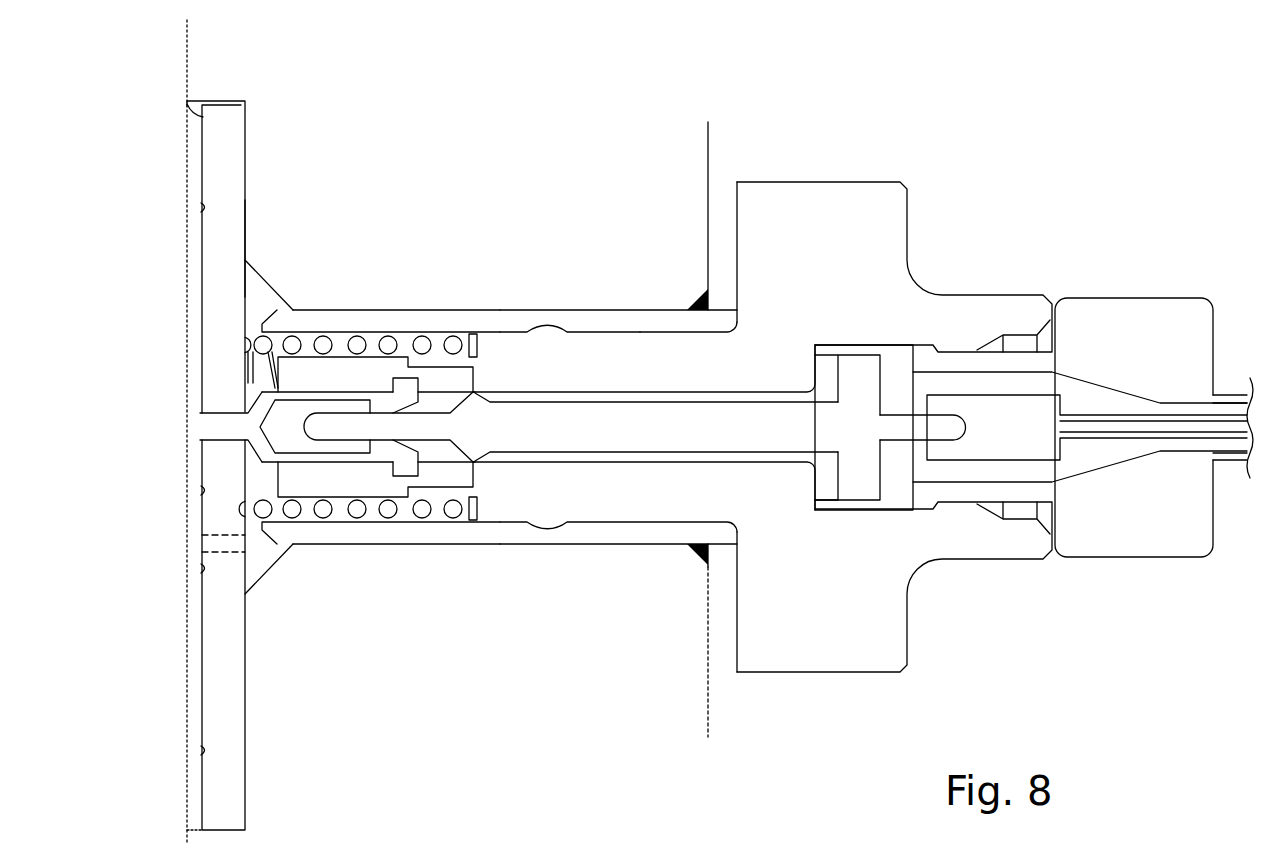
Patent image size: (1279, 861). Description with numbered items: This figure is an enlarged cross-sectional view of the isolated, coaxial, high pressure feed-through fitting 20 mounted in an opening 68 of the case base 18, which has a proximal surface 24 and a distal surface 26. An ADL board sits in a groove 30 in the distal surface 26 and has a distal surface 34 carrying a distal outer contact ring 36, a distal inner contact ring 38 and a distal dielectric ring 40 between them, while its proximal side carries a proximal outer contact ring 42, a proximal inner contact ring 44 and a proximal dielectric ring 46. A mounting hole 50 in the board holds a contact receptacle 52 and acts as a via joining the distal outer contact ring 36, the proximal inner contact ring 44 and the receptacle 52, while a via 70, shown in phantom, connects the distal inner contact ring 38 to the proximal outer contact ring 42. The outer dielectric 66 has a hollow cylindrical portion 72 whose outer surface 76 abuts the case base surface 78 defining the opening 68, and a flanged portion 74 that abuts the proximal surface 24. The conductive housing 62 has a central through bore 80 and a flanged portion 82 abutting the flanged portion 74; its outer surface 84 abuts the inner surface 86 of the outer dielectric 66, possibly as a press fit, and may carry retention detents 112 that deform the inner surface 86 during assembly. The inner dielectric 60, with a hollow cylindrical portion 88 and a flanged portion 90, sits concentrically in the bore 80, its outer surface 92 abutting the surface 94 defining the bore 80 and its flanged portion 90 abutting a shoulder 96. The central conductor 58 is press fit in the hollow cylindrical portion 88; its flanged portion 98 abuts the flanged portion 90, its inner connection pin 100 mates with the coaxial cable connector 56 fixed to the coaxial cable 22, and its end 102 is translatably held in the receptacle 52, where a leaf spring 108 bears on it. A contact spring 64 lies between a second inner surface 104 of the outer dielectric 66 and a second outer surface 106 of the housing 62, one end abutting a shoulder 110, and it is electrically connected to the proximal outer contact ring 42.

The case base 18 is at (710, 163).
The feed-through fitting 20 is at (932, 110).
The coaxial cable 22 is at (1236, 390).
The proximal surface 24 is at (680, 160).
The distal surface 26 is at (183, 47).
The groove 30 is at (203, 117).
The distal surface 34 is at (201, 750).
The distal outer contact ring 36 is at (201, 207).
The distal inner contact ring 38 is at (201, 568).
The distal dielectric ring 40 is at (201, 490).
The proximal outer contact ring 42 is at (242, 298).
The proximal inner contact ring 44 is at (243, 397).
The proximal dielectric ring 46 is at (243, 368).
The mounting hole 50 is at (208, 410).
The contact receptacle 52 is at (217, 426).
The coaxial cable connector 56 is at (1094, 303).
The central conductor 58 is at (603, 440).
The inner dielectric 60 is at (777, 456).
The conductive housing 62 is at (773, 644).
The contact spring 64 is at (357, 340).
The outer dielectric 66 is at (454, 310).
The opening 68 is at (262, 550).
The via 70 is at (223, 556).
The hollow cylindrical portion 72 is at (602, 312).
The flanged portion 74 is at (727, 246).
The outer surface 76 is at (649, 309).
The case base surface 78 is at (487, 538).
The central through bore 80 is at (900, 364).
The flanged portion 82 is at (877, 216).
The outer surface 84 is at (583, 330).
The inner surface 86 is at (620, 515).
The hollow cylindrical portion 88 is at (750, 393).
The flanged portion 90 is at (827, 364).
The outer surface 92 is at (701, 393).
The surface 94 is at (560, 392).
The shoulder 96 is at (810, 486).
The flanged portion 98 is at (853, 480).
The inner connection pin 100 is at (947, 430).
The end 102 is at (350, 425).
The second inner surface 104 is at (407, 330).
The second outer surface 106 is at (460, 492).
The leaf spring 108 is at (413, 460).
The shoulder 110 is at (478, 345).
The retention detent 112 is at (550, 324).